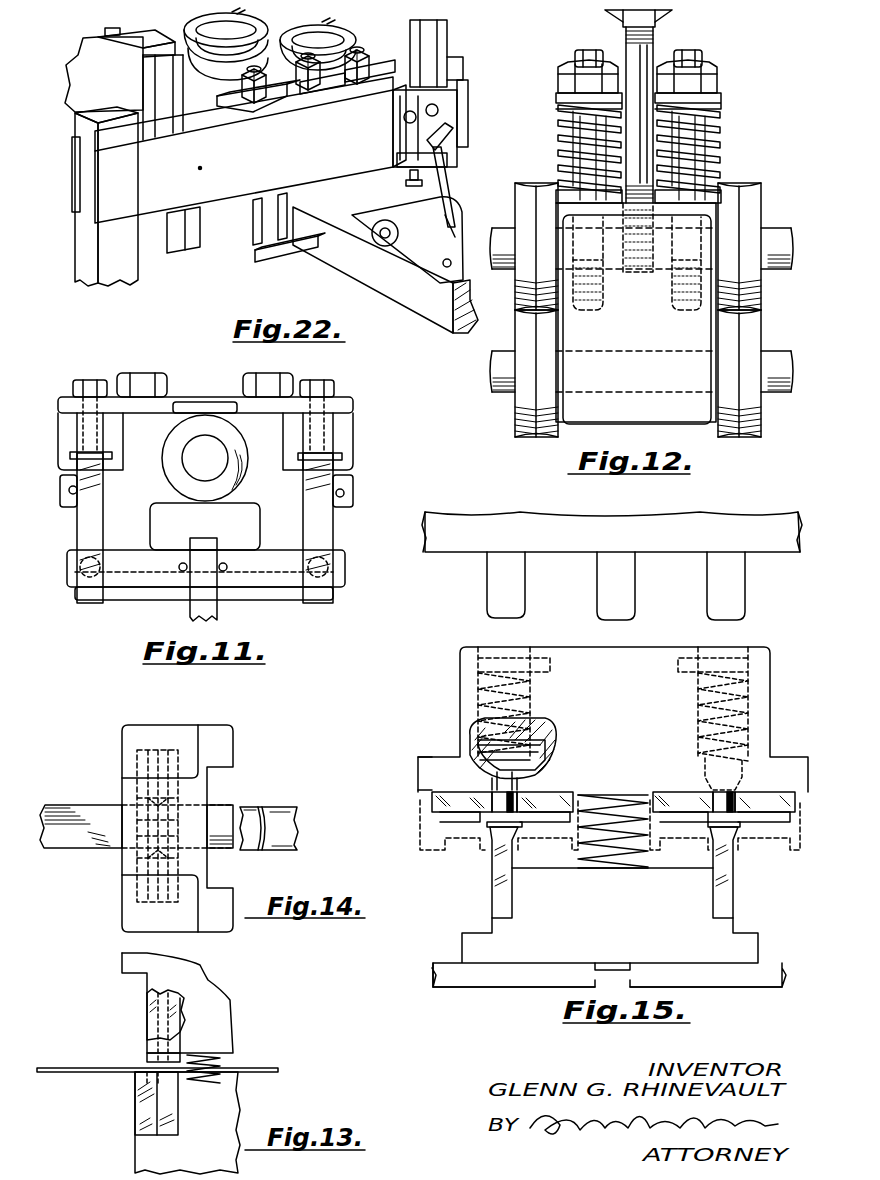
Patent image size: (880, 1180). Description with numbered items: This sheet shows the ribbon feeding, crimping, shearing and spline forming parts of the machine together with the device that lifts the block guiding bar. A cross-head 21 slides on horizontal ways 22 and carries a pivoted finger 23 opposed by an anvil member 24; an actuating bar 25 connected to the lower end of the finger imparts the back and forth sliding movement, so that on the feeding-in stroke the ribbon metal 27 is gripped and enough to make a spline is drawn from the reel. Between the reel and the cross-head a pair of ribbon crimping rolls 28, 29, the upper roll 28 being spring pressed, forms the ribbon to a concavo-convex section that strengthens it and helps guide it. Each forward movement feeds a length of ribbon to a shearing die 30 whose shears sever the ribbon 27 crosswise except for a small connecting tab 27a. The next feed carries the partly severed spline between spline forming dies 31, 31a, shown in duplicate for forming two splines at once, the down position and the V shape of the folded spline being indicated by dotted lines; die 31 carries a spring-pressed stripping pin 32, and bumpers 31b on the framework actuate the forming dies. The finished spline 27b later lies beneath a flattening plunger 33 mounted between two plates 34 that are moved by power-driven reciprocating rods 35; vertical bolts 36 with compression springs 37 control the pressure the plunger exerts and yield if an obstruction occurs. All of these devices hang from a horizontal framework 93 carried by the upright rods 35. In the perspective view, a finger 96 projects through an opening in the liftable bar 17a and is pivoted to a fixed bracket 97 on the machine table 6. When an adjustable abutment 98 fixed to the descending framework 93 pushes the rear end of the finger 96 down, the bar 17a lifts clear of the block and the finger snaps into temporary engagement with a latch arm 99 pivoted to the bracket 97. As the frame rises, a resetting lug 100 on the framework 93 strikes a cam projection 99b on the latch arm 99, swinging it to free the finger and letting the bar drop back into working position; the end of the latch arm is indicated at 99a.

In FIG. 22, the machine table 6 is at (462, 285).
In FIG. 22, the liftable bar 17a is at (350, 265).
In FIG. 11, the cross-head 21 is at (165, 493).
In FIG. 11, the horizontal ways 22 is at (70, 429).
In FIG. 11, the pivoted finger 23 is at (85, 523).
In FIG. 11, the anvil member 24 is at (68, 455).
In FIG. 11, the actuating bar 25 is at (208, 603).
In FIG. 11, the ribbon metal 27 is at (337, 460).
In FIG. 14, the ribbon metal 27 is at (80, 815).
In FIG. 13, the ribbon metal 27 is at (63, 1068).
In FIG. 15, the ribbon metal 27 is at (485, 808).
In FIG. 14, the connecting tab 27a is at (266, 815).
In FIG. 15, the spline 27b is at (488, 828).
In FIG. 22, the upper ribbon crimping roll 28 is at (513, 292).
In FIG. 12, the upper ribbon crimping roll 28 is at (515, 298).
In FIG. 12, the lower ribbon crimping roll 29 is at (518, 402).
In FIG. 14, the shearing die 30 is at (130, 860).
In FIG. 13, the shearing die 30 is at (147, 1026).
In FIG. 15, the spline forming die 31 is at (613, 757).
In FIG. 15, the spline forming die 31a is at (609, 927).
In FIG. 15, the bumpers 31b is at (605, 590).
In FIG. 15, the spring-pressed stripping pin 32 is at (505, 800).
In FIG. 22, the flattening plunger 33 is at (180, 236).
In FIG. 22, the plates 34 is at (235, 235).
In FIG. 22, the upright rods 35 is at (480, 72).
In FIG. 22, the vertical bolts 36 is at (350, 20).
In FIG. 22, the compression springs 37 is at (190, 18).
In FIG. 22, the horizontal framework 93 is at (235, 125).
In FIG. 22, the finger 96 is at (280, 255).
In FIG. 22, the fixed bracket 97 is at (440, 250).
In FIG. 22, the adjustable abutment 98 is at (412, 182).
In FIG. 22, the latch arm 99 is at (448, 186).
In FIG. 22, the strap end 99a is at (455, 220).
In FIG. 22, the cam projection 99b is at (453, 140).
In FIG. 22, the resetting lug 100 is at (447, 162).